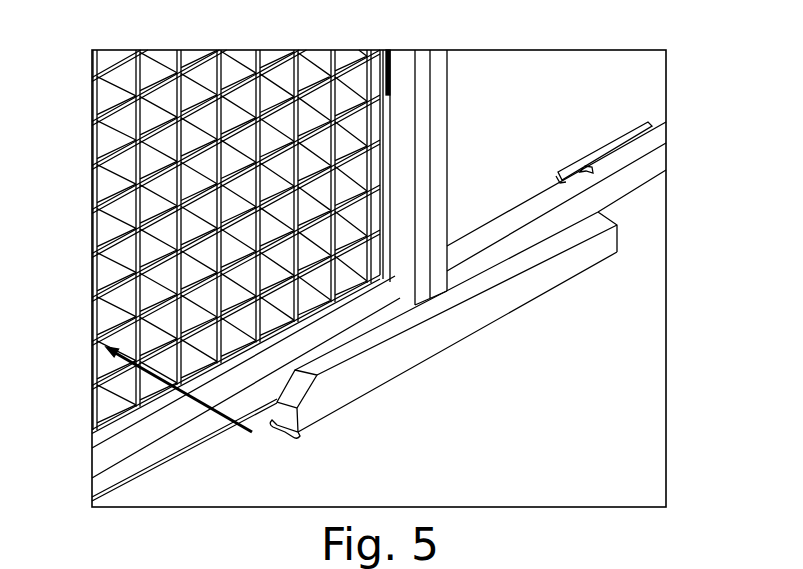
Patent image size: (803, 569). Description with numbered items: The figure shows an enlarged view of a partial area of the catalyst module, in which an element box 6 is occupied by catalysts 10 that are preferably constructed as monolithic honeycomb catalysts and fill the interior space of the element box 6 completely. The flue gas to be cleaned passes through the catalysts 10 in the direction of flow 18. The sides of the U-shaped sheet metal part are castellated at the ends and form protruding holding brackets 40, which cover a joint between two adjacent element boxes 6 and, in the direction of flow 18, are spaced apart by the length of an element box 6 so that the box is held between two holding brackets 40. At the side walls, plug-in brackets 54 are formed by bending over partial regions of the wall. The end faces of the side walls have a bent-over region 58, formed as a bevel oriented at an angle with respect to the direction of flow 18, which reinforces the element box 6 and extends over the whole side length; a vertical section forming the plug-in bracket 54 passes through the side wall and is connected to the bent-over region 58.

The element box 6 is at (425, 210).
The catalyst 10 is at (329, 143).
The direction of flow 18 is at (203, 405).
The holding bracket 40 is at (548, 268).
The plug-in bracket 54 is at (627, 143).
The bent-over region 58 is at (402, 133).